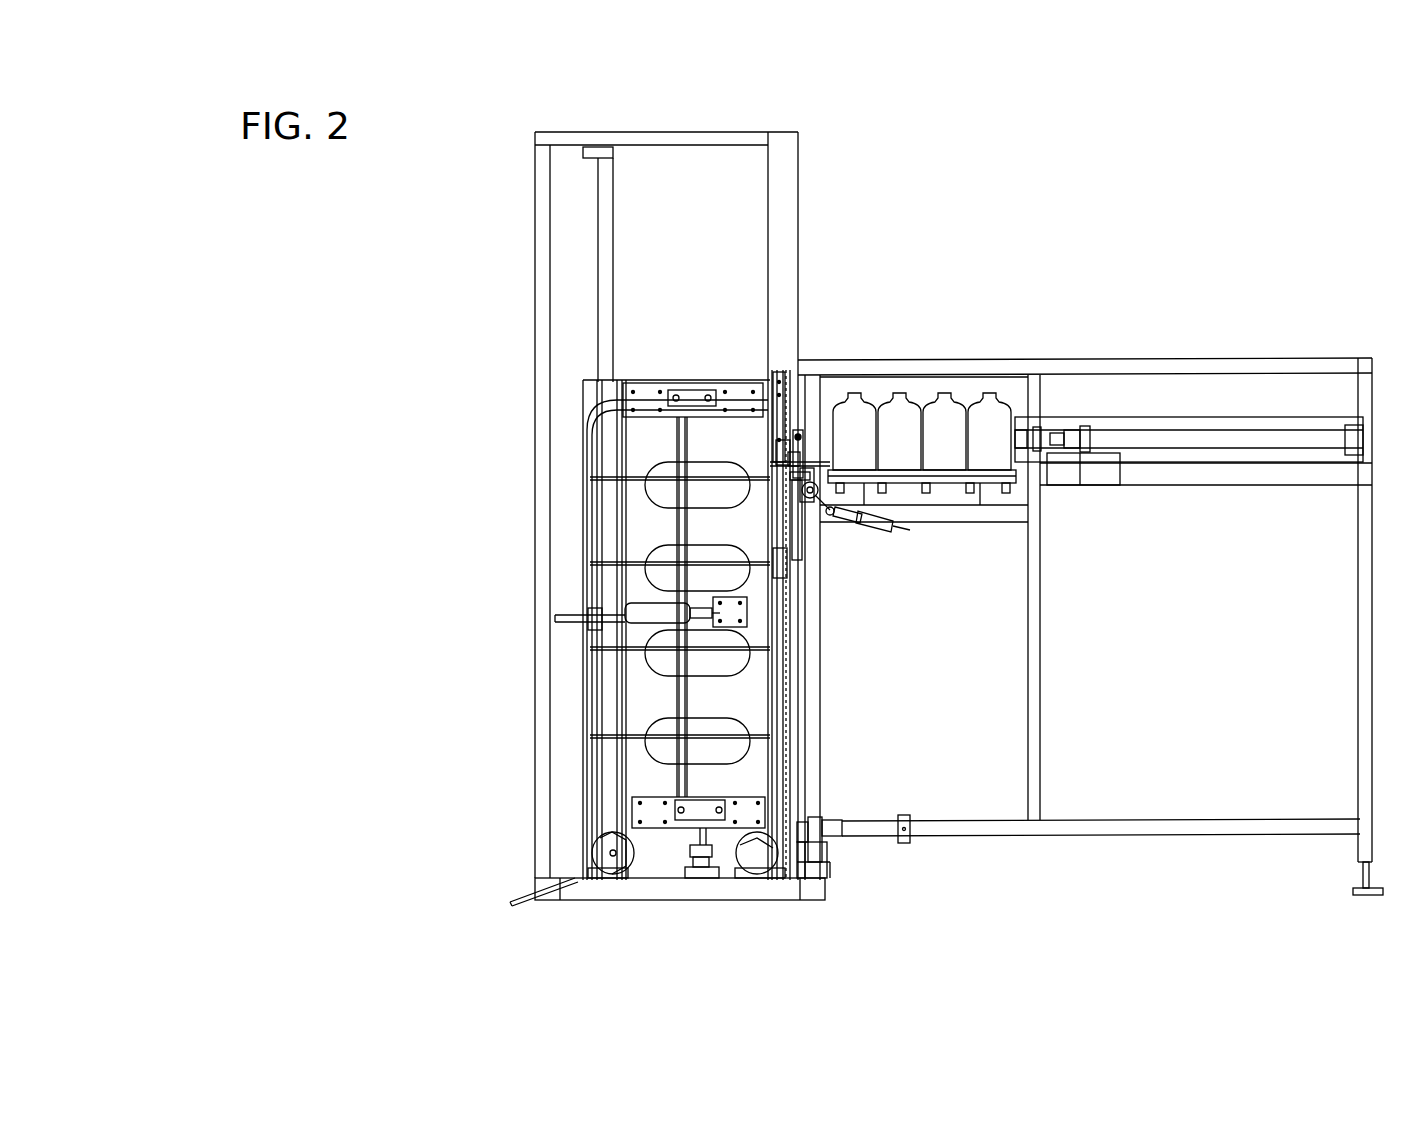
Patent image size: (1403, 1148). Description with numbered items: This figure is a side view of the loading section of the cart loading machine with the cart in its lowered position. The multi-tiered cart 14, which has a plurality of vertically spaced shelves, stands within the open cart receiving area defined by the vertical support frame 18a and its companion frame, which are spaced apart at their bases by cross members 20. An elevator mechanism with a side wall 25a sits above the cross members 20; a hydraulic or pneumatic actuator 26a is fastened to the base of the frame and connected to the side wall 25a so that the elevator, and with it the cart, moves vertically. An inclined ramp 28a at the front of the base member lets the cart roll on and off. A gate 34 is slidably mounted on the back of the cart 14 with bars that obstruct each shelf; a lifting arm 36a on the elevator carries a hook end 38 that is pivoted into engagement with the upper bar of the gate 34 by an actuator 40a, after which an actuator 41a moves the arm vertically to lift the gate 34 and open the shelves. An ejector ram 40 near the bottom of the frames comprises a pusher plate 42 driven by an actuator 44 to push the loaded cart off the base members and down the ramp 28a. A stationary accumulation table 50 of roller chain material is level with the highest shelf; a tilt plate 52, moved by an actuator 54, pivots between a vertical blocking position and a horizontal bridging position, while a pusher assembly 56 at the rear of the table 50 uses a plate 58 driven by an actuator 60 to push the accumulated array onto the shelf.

The multi-tiered cart 14 is at (600, 845).
The vertical support frame 18a is at (508, 390).
The cross members 20 is at (578, 898).
The side wall 25a is at (625, 383).
The hydraulic or pneumatic actuator 26a is at (700, 782).
The inclined ramp 28a is at (522, 896).
The gate 34 is at (782, 660).
The lifting arm 36a is at (782, 440).
The hook end 38 is at (790, 456).
The ejector ram 40 is at (853, 796).
The hydraulic or pneumatic actuator 40a is at (805, 458).
The actuator 41a is at (796, 543).
The pusher plate 42 is at (797, 862).
The hydraulic or pneumatic actuator 44 is at (860, 832).
The stationary accumulation table 50 is at (994, 498).
The tilt plate 52 is at (832, 463).
The hydraulic or pneumatic actuator 54 is at (873, 530).
The pusher assembly 56 is at (1089, 396).
The plate 58 is at (1020, 470).
The hydraulic or pneumatic actuator 60 is at (1228, 440).